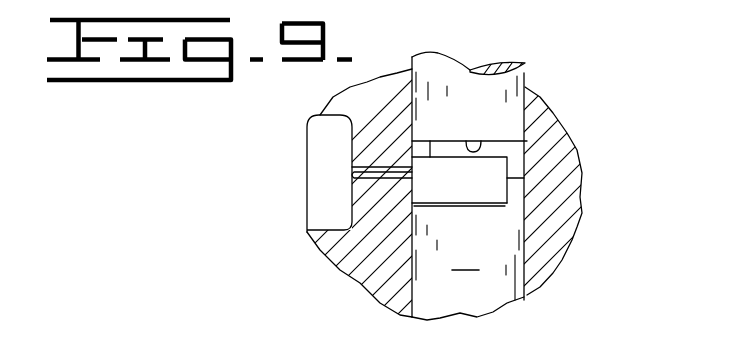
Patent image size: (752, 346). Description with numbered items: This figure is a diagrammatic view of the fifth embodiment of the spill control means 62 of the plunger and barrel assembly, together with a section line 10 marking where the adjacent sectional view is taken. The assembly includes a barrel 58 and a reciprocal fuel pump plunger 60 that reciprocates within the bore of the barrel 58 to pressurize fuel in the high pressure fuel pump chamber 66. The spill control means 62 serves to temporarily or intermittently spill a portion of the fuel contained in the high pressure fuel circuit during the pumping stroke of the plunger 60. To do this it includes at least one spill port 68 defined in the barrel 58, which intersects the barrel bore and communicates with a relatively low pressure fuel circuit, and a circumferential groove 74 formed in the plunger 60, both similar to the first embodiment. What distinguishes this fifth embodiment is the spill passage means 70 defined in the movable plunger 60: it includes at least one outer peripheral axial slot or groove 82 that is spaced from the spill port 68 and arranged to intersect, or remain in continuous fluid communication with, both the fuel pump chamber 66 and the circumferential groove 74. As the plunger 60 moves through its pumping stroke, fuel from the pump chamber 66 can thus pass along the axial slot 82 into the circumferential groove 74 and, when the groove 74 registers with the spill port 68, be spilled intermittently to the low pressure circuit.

The section line 10- 10 is at (630, 142).
The barrel 58 is at (561, 264).
The reciprocal fuel pump plunger 60 is at (608, 5).
The spill control means 62 is at (305, 171).
The high pressure fuel pump chamber 66 is at (468, 188).
The spill port 68 is at (352, 175).
The spill passage means 70 is at (548, 215).
The circumferential groove 74 is at (480, 147).
The outer peripheral axial slot or groove 82 is at (524, 178).